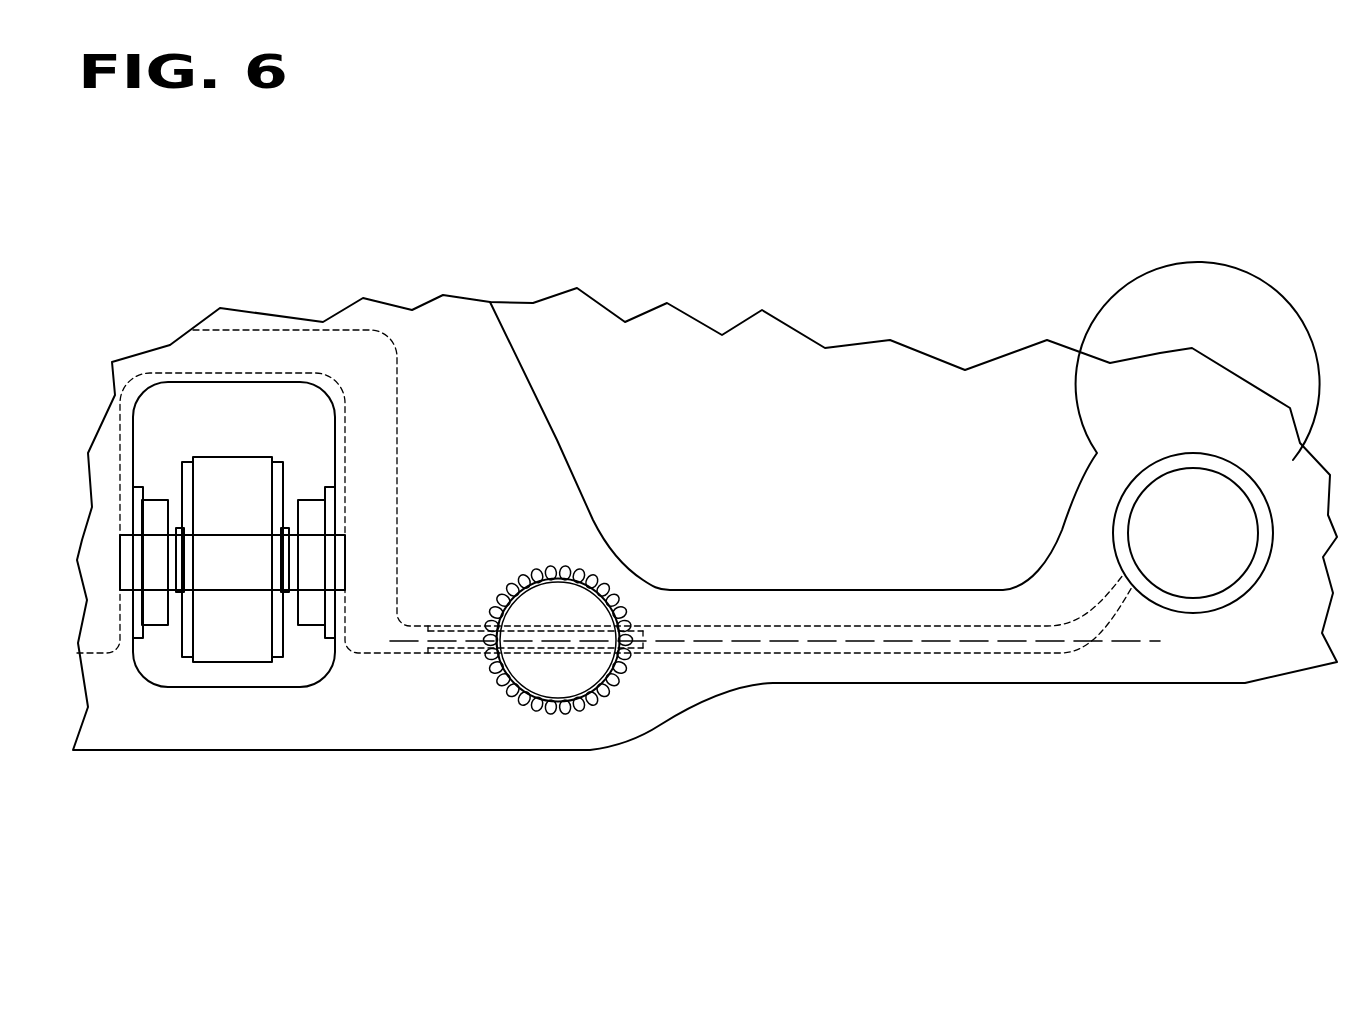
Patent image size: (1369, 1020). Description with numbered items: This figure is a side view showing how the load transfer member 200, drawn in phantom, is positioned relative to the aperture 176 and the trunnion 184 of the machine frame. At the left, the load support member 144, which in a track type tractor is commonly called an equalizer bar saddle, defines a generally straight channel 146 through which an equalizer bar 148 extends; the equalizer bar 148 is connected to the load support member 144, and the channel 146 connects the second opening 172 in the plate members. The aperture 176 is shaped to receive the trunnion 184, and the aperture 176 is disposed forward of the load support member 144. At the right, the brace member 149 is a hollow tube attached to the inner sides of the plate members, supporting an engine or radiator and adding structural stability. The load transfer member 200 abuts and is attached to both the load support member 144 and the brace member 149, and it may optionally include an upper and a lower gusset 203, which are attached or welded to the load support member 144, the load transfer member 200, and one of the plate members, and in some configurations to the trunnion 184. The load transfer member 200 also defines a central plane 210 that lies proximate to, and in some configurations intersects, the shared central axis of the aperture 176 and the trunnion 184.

The load support member 144 is at (397, 352).
The channel 146 is at (213, 395).
The equalizer bar 148 is at (223, 635).
The brace member 149 is at (1193, 462).
The second opening 172 is at (332, 658).
The aperture 176 is at (597, 599).
The trunnion 184 is at (562, 685).
The load transfer member 200 is at (912, 648).
The upper and lower gusset 203 is at (440, 630).
The central plane 210 is at (820, 641).